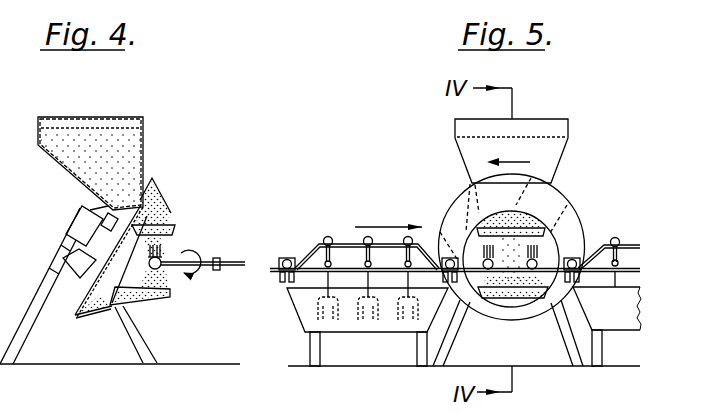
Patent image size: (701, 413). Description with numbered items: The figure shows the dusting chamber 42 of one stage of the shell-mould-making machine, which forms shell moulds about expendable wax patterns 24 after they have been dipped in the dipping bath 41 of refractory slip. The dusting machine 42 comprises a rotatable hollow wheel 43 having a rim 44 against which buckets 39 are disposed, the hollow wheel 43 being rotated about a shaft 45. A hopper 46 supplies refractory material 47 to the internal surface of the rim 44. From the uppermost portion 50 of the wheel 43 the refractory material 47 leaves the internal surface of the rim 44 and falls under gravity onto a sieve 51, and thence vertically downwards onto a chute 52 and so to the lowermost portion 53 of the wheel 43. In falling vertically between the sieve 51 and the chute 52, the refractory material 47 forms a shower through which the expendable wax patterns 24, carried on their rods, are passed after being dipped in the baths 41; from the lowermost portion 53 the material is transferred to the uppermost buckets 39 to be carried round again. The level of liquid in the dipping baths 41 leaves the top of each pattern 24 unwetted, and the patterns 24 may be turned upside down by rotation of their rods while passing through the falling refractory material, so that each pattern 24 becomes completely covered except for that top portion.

In FIG. 4, the expendable wax pattern 24 is at (160, 265).
In FIG. 5, the expendable wax pattern 24 is at (538, 252).
In FIG. 5, the bucket 39 is at (545, 227).
In FIG. 5, the dipping bath 41 is at (367, 333).
In FIG. 4, the dusting chamber 42 is at (170, 196).
In FIG. 5, the dusting chamber 42 is at (582, 227).
In FIG. 4, the hollow wheel 43 is at (76, 314).
In FIG. 5, the hollow wheel 43 is at (460, 196).
In FIG. 4, the rim 44 is at (116, 309).
In FIG. 4, the shaft 45 is at (95, 238).
In FIG. 4, the hopper 46 is at (58, 160).
In FIG. 5, the hopper 46 is at (464, 163).
In FIG. 4, the refractory material 47 is at (88, 140).
In FIG. 5, the refractory material 47 is at (530, 208).
In FIG. 4, the uppermost portion 50 is at (155, 200).
In FIG. 4, the sieve 51 is at (175, 232).
In FIG. 5, the sieve 51 is at (520, 222).
In FIG. 4, the chute 52 is at (158, 298).
In FIG. 5, the chute 52 is at (513, 293).
In FIG. 4, the lowermost portion 53 is at (80, 297).